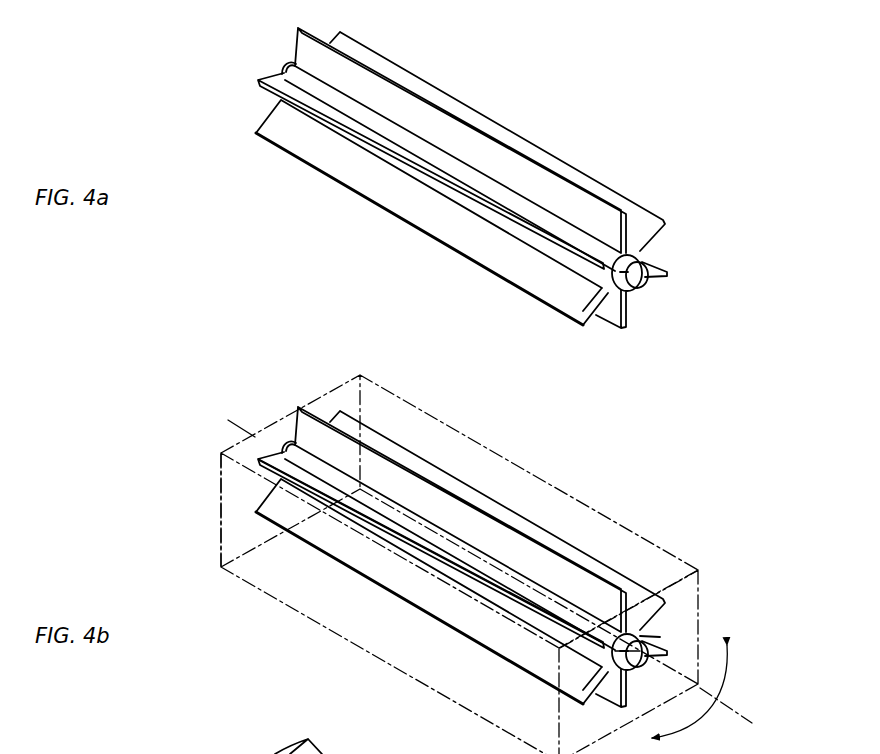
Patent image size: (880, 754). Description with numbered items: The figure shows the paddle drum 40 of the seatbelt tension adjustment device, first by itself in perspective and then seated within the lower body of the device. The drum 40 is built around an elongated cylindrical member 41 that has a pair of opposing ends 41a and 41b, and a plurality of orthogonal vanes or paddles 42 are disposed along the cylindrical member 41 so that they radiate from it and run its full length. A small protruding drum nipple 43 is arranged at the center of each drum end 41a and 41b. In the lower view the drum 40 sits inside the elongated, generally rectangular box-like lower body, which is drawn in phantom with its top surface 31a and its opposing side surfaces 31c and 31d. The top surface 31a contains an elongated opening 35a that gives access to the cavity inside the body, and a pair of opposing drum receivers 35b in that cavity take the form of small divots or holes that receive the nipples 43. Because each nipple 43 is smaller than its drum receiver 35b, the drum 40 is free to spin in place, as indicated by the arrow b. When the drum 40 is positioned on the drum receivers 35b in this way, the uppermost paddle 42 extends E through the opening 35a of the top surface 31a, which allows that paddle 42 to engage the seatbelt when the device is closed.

In FIG. 4a, the paddle drum 40 is at (587, 124).
In FIG. 4a, the elongated cylindrical member 41 is at (480, 150).
In FIG. 4b, the elongated cylindrical member 41 is at (462, 555).
In FIG. 4a, the drum end 41a is at (643, 258).
In FIG. 4a, the drum end 41b is at (288, 65).
In FIG. 4a, the vanes/paddles 42 is at (398, 91).
In FIG. 4b, the vanes/paddles 42 is at (461, 572).
In FIG. 4a, the drum nipple 43 is at (283, 70).
In FIG. 4b, the drum nipple 43 is at (512, 555).
In FIG. 4b, the top surface 31a is at (405, 410).
In FIG. 4b, the side surface 31c is at (232, 501).
In FIG. 4b, the side surface 31d is at (640, 528).
In FIG. 4b, the elongated opening 35a is at (495, 478).
In FIG. 4b, the drum receiver 35b is at (643, 636).
In FIG. 4b, the extension of paddle through opening E is at (634, 581).
In FIG. 4b, the arrow indicating drum rotation b is at (689, 691).